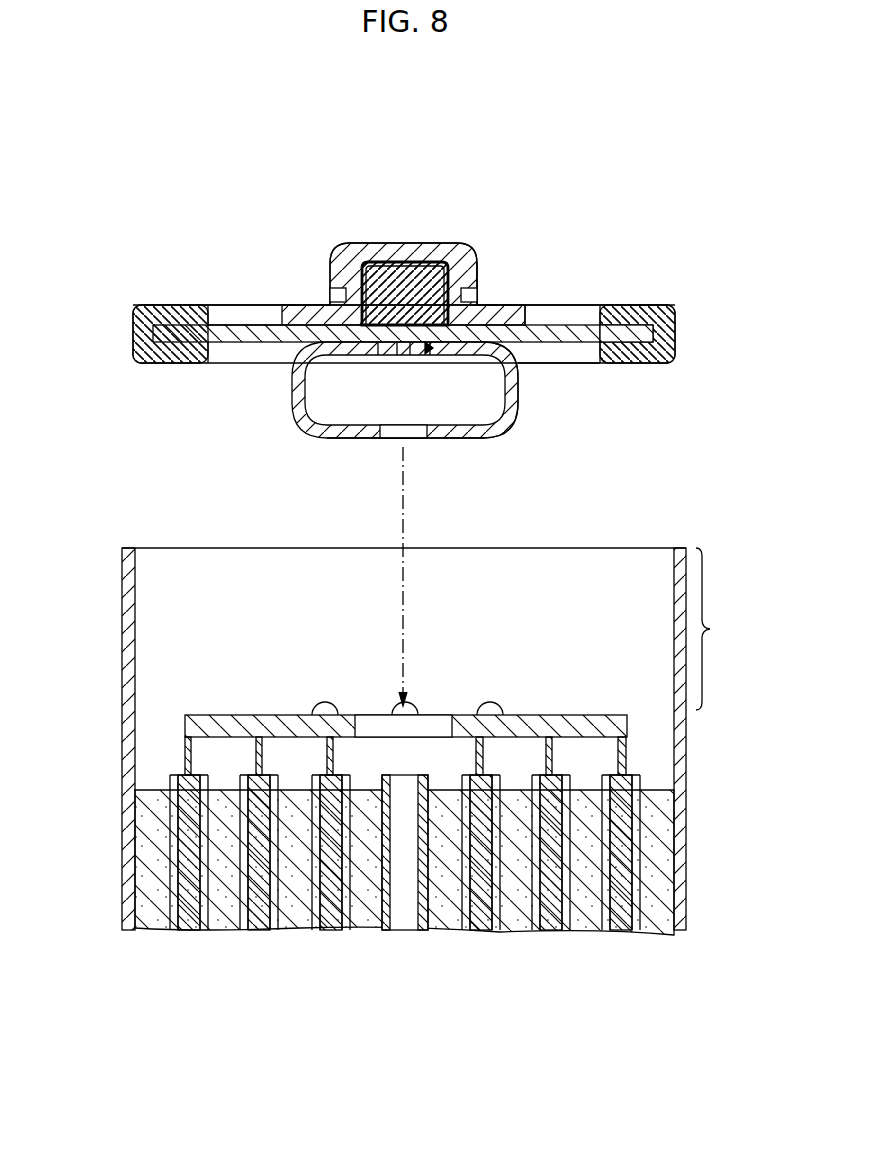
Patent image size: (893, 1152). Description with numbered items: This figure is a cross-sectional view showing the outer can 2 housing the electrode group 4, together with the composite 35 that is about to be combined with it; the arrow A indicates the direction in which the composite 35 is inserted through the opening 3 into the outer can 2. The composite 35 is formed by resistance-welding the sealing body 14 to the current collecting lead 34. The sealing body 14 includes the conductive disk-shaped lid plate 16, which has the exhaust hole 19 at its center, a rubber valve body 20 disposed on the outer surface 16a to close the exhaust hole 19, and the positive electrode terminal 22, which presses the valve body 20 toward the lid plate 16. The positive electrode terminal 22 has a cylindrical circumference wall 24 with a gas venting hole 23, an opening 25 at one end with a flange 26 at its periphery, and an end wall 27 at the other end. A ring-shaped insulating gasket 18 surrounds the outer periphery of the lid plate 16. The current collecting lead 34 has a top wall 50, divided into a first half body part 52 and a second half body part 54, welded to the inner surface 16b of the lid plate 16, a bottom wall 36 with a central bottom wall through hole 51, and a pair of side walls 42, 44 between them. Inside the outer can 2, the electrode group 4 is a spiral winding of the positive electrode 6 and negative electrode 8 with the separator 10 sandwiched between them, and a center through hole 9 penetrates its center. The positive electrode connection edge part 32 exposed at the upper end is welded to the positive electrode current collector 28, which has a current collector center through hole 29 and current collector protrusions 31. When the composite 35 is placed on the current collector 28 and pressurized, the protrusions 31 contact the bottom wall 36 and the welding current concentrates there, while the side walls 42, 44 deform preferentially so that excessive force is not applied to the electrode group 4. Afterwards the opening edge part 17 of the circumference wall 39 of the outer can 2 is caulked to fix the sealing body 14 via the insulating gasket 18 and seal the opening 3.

The outer can 2 is at (135, 828).
The opening 3 is at (394, 707).
The electrode group 4 is at (412, 885).
The positive electrode 6 is at (215, 910).
The negative electrode 8 is at (200, 862).
The center through hole 9 is at (410, 932).
The separator 10 is at (230, 880).
The sealing body 14 is at (235, 318).
The lid plate 16 is at (268, 335).
The outer surface 16a is at (226, 322).
The inner surface 16b is at (237, 346).
The opening edge part 17 is at (720, 629).
The insulating gasket 18 is at (160, 305).
The exhaust hole 19 is at (366, 262).
The valve body 20 is at (407, 262).
The positive electrode terminal 22 is at (442, 240).
The gas venting hole 23 is at (334, 292).
The circumference wall 24 is at (486, 262).
The opening 25 is at (452, 330).
The flange 26 is at (528, 320).
The end wall 27 is at (418, 243).
The positive electrode current collector 28 is at (465, 703).
The current collector center through hole 29 is at (360, 730).
The current collector protrusion 31 is at (325, 703).
The positive electrode connection edge part 32 is at (258, 758).
The current collecting lead 34 is at (520, 349).
The composite 35 is at (413, 301).
The bottom wall 36 is at (388, 430).
The circumference wall 39 is at (122, 692).
The side wall 42 is at (407, 410).
The side wall 44 is at (518, 400).
The top wall 50 is at (405, 207).
The bottom wall through hole 51 is at (418, 440).
The first half body part 52 is at (470, 258).
The second half body part 54 is at (340, 258).
The arrow A is at (398, 510).